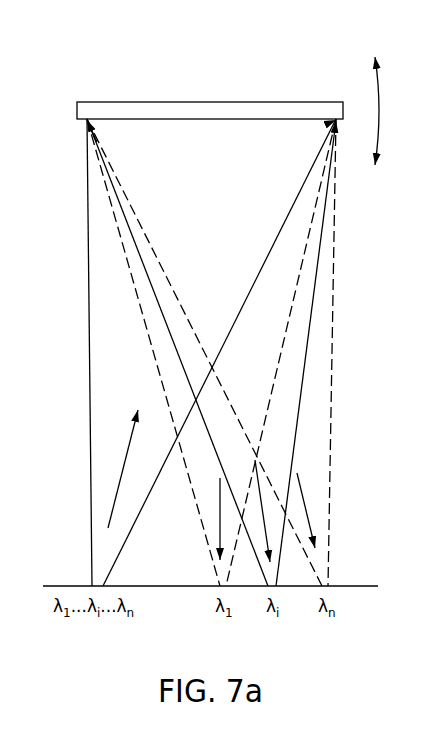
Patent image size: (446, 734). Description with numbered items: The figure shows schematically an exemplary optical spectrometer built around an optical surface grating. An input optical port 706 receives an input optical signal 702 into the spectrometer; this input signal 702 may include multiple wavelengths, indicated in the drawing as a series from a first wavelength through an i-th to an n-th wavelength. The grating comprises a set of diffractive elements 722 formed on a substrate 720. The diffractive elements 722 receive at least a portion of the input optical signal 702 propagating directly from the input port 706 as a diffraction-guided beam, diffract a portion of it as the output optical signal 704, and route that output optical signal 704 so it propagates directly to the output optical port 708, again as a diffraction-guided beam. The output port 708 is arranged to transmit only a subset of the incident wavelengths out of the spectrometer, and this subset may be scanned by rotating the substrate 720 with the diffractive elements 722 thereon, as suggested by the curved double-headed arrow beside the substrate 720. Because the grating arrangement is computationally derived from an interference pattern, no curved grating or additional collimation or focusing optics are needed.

The substrate 720 is at (205, 108).
The diffractive elements 722 is at (212, 124).
The input optical signal 702 is at (90, 338).
The output optical signal 704 is at (285, 342).
The input optical port 706 is at (97, 582).
The output optical port 708 is at (276, 584).